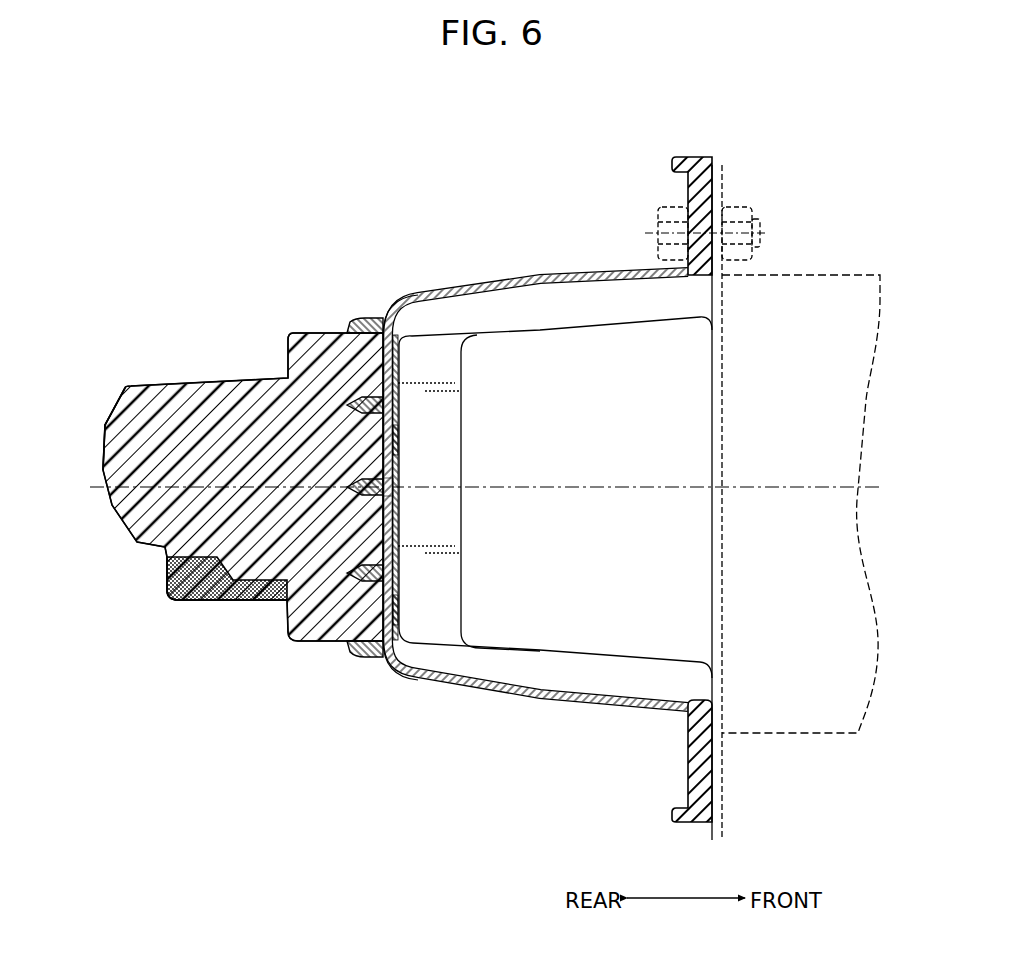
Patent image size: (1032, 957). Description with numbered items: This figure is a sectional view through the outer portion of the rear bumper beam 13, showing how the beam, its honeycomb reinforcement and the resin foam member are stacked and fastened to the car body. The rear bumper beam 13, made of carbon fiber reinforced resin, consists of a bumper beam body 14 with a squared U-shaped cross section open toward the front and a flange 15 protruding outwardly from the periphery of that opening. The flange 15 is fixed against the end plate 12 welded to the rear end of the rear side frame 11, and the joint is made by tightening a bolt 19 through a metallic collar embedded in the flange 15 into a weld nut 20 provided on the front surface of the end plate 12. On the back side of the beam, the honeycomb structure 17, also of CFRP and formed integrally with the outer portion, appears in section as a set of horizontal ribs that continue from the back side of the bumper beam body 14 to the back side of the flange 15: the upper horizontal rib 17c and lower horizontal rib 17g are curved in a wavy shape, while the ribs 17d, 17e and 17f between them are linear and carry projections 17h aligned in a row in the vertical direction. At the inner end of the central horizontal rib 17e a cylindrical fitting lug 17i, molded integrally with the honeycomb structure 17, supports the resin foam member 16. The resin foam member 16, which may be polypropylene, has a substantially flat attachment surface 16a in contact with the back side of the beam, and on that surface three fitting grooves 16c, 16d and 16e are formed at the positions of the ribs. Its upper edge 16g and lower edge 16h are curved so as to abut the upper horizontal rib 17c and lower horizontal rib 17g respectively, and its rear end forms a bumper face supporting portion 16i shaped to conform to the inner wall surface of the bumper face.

The rear side frame 11 is at (780, 274).
The end plate 12 is at (724, 406).
The rear bumper beam 13 is at (550, 505).
The bumper beam body 14 is at (575, 704).
The flange 15 is at (688, 780).
The resin foam member 16 is at (224, 376).
The attachment surface 16a is at (398, 512).
The fitting groove 16c is at (395, 402).
The fitting groove 16d is at (395, 487).
The fitting groove 16e is at (395, 577).
The upper edge 16g is at (376, 320).
The lower edge 16h is at (366, 662).
The bumper face supporting portion 16i is at (104, 420).
The honeycomb structure 17 is at (363, 323).
The upper horizontal rib 17c is at (348, 326).
The horizontal rib 17d is at (352, 405).
The central horizontal rib 17e is at (352, 489).
The horizontal rib 17f is at (350, 574).
The lower horizontal rib 17g is at (350, 651).
The projection 17h is at (397, 439).
The fitting lug 17i is at (290, 561).
The bolt 19 is at (655, 233).
The weld nut 20 is at (735, 208).